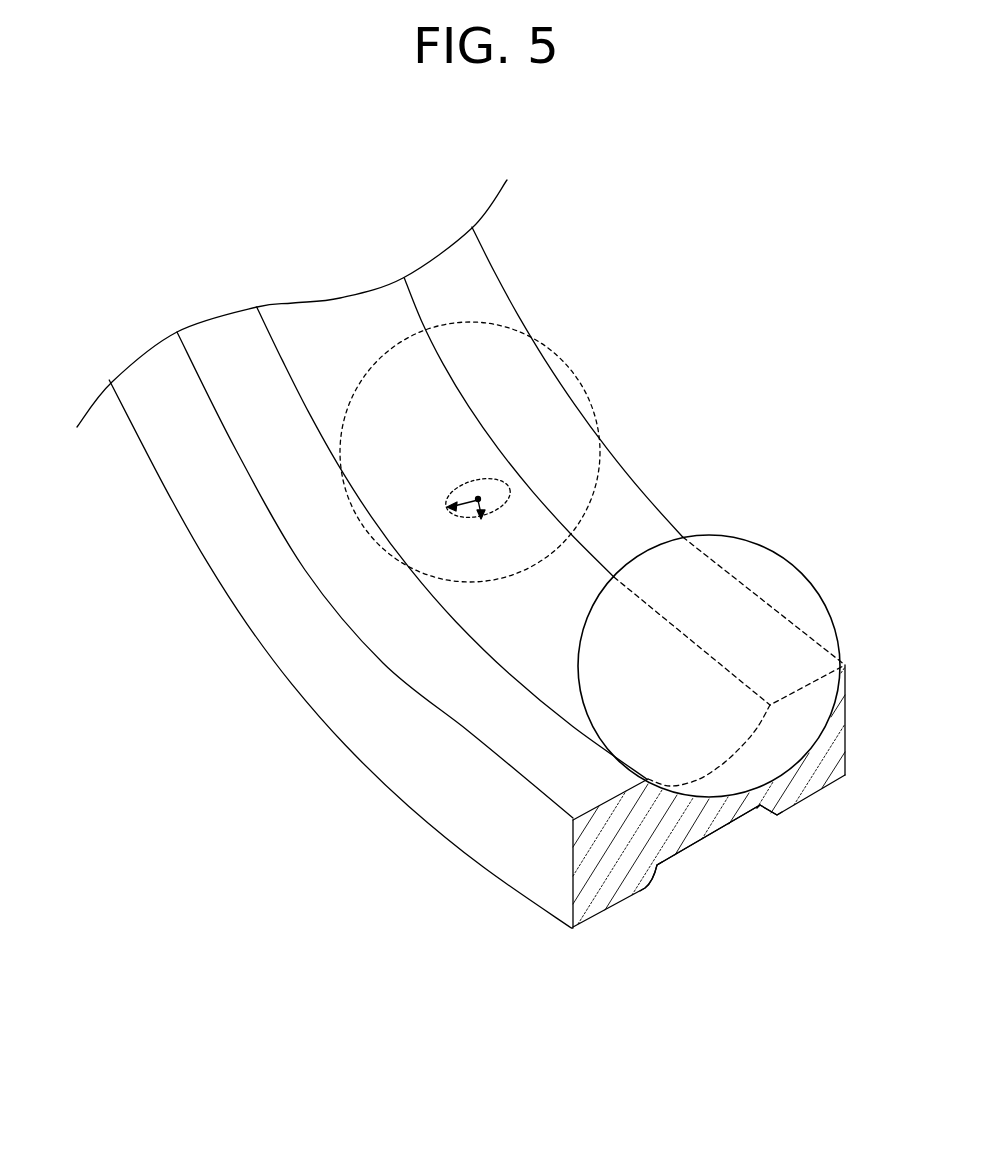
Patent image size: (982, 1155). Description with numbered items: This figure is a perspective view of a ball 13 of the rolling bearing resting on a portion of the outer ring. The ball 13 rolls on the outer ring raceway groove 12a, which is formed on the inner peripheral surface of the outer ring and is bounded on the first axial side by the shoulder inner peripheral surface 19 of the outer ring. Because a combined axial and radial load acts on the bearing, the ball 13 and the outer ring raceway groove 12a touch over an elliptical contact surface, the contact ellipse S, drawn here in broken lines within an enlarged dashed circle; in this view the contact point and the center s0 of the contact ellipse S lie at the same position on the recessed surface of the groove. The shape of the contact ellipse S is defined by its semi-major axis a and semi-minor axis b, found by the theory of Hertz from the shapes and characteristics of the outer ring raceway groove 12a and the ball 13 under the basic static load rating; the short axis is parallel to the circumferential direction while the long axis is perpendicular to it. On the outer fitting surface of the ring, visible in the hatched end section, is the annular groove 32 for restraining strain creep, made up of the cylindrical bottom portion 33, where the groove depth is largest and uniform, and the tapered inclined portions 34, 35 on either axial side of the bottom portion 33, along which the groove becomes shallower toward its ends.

The outer ring raceway groove 12a is at (497, 647).
The ball 13 is at (573, 367).
The shoulder inner peripheral surface 19 is at (637, 520).
The annular groove 32 is at (720, 828).
The bottom portion 33 is at (698, 845).
The inclined portion 34 is at (763, 817).
The inclined portion 35 is at (654, 878).
The center of the contact ellipse s0 is at (478, 498).
The contact ellipse S is at (458, 496).
The semi-major axis a is at (466, 505).
The semi-minor axis b is at (480, 500).